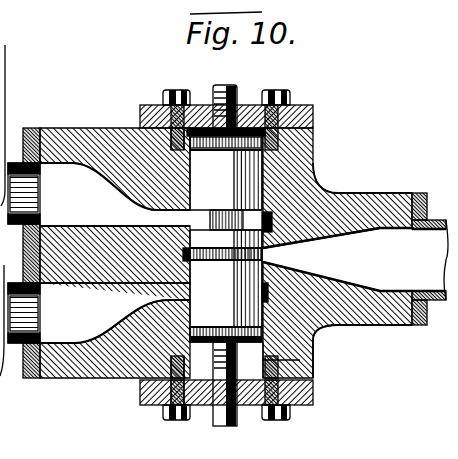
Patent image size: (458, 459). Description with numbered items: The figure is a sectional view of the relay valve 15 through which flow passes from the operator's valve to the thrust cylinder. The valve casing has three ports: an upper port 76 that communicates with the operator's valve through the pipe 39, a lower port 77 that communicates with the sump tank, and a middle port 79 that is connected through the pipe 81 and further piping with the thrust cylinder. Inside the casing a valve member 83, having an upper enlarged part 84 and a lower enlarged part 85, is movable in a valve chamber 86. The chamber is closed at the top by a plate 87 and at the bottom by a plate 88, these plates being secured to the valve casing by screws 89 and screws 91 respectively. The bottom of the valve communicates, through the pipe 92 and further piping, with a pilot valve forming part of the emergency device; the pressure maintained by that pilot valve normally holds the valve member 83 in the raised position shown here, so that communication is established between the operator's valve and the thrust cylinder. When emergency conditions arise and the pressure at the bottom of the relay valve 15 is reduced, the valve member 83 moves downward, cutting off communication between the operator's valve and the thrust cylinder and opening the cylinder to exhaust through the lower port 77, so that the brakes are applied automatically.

The relay valve 15 is at (103, 128).
The pipe 39 is at (14, 158).
The upper port 76 is at (272, 218).
The lower port 77 is at (178, 292).
The middle port 79 is at (332, 195).
The pipe 81 is at (448, 224).
The valve member 83 is at (243, 176).
The upper enlarged part 84 is at (310, 136).
The lower enlarged part 85 is at (285, 323).
The valve chamber 86 is at (252, 358).
The top plate 87 is at (150, 105).
The bottom plate 88 is at (300, 395).
The screws 89 is at (283, 95).
The screws 91 is at (290, 413).
The pipe 92 is at (166, 421).